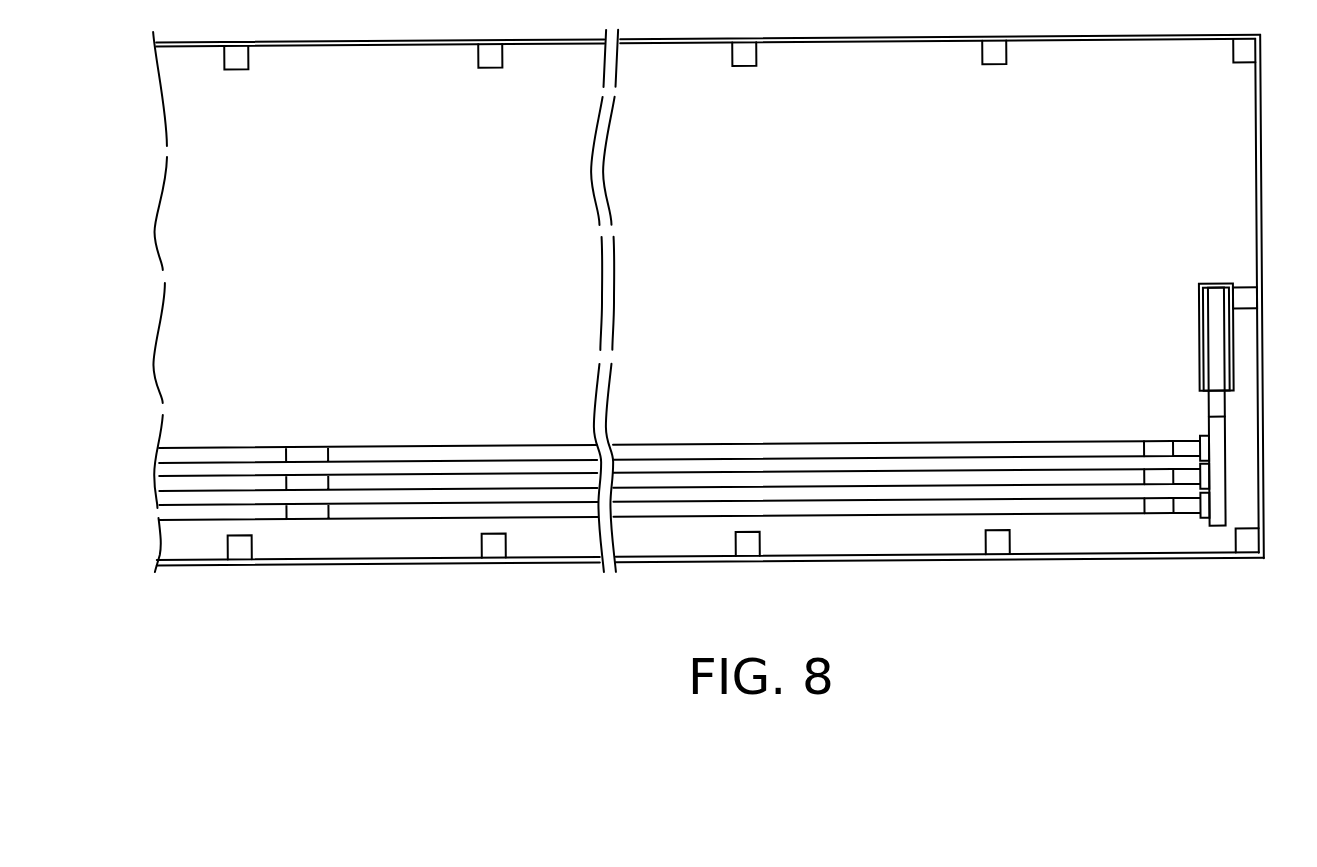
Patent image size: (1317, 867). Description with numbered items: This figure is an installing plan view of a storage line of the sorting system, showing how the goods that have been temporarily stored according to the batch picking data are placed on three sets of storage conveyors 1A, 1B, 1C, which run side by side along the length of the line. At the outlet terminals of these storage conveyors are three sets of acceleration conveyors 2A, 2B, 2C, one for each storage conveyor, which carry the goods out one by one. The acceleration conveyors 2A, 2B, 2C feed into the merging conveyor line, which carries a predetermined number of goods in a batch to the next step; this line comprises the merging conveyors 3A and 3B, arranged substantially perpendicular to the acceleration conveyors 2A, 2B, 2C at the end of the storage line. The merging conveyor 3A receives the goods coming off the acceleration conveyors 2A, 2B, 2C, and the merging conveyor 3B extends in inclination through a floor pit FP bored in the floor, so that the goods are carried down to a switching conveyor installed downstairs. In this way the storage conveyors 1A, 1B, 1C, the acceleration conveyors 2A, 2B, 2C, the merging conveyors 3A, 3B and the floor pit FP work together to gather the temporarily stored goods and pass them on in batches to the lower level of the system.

The storage conveyor 1A is at (883, 458).
The storage conveyor 1B is at (930, 483).
The storage conveyor 1C is at (982, 516).
The acceleration conveyor 2A is at (1155, 455).
The acceleration conveyor 2B is at (1173, 482).
The acceleration conveyor 2C is at (1187, 518).
The floor pit FP is at (1210, 369).
The merging conveyor 3A is at (1217, 490).
The merging conveyor 3B is at (1217, 368).